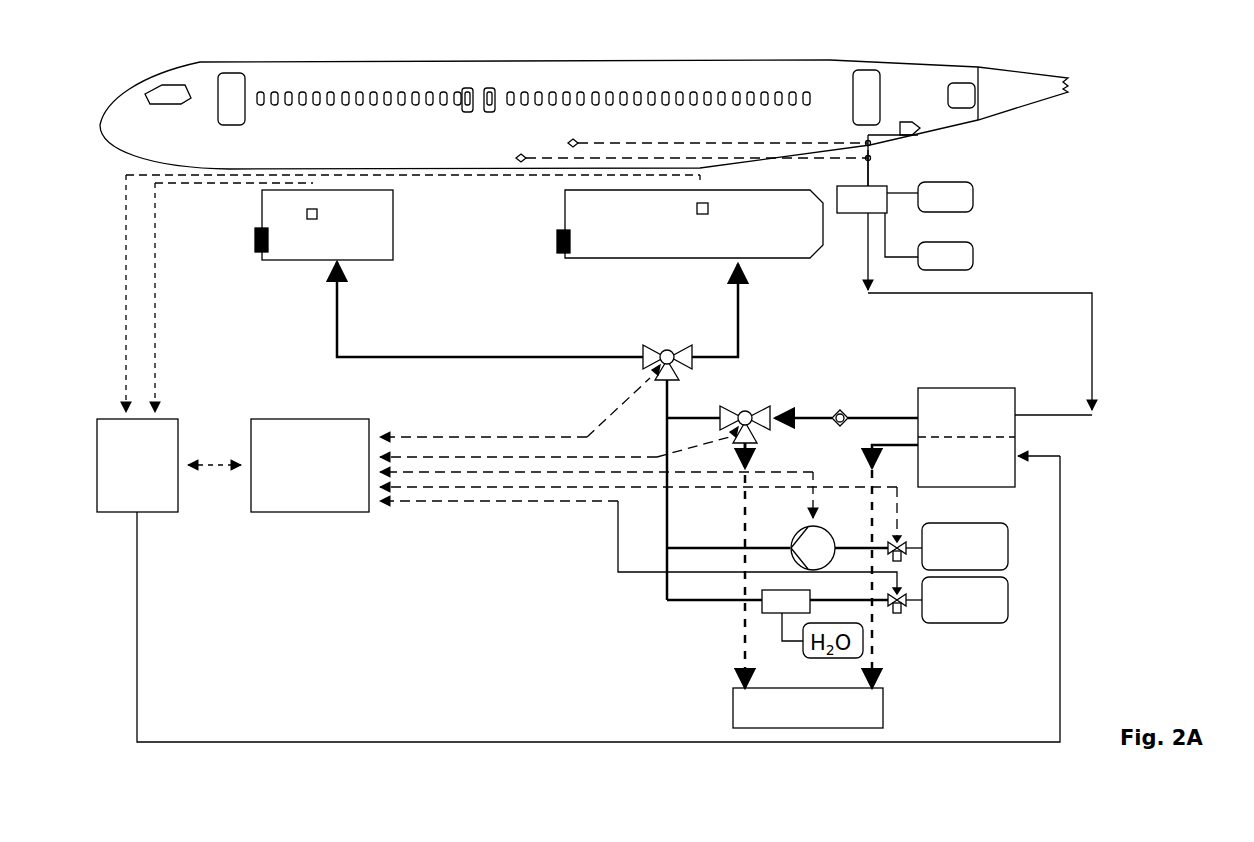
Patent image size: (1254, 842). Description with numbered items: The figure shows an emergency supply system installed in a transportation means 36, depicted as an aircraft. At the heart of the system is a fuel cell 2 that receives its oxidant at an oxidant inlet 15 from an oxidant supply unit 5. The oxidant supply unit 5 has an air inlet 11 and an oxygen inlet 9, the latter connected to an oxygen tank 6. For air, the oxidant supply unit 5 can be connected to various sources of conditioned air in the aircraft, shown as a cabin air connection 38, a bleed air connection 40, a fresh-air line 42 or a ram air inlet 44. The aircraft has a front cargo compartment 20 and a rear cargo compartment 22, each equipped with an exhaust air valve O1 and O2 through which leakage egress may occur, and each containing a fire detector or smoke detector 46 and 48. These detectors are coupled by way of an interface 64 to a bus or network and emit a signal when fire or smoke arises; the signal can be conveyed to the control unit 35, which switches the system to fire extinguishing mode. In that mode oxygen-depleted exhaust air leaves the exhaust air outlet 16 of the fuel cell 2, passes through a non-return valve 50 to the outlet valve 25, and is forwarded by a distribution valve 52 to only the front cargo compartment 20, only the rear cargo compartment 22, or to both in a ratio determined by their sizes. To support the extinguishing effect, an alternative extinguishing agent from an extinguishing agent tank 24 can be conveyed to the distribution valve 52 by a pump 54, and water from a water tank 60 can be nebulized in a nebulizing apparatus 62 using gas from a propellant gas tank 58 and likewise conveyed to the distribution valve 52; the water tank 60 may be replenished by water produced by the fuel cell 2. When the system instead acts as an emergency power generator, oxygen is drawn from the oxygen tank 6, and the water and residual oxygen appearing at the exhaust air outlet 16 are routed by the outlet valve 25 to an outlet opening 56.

The transportation means 36 is at (662, 44).
The ram air inlet 44 is at (906, 122).
The fresh-air line 42 is at (566, 143).
The bleed air connection 40 is at (513, 158).
The cabin air connection 38 is at (828, 142).
The air inlet 11 is at (874, 172).
The front cargo compartment 20 is at (365, 258).
The exhaust air valve O1 is at (255, 236).
The fire detector or smoke detector 46 is at (311, 220).
The rear cargo compartment 22 is at (620, 262).
The exhaust air valve O2 is at (557, 238).
The fire detector or smoke detector 48 is at (710, 208).
The oxidant supply unit 5 is at (855, 203).
The oxygen tank 6 is at (968, 188).
The oxygen inlet 9 is at (892, 208).
The distribution valve 52 is at (665, 350).
The outlet valve 25 is at (750, 408).
The non-return valve 50 is at (840, 408).
The fuel cell 2 is at (985, 392).
The exhaust air outlet 16 is at (912, 410).
The oxidant inlet 15 is at (1022, 407).
The water tank 60 is at (855, 652).
The control unit 35 is at (168, 433).
The interface 64 is at (312, 428).
The pump 54 is at (815, 545).
The extinguishing agent tank 24 is at (995, 545).
The propellant gas tank 58 is at (995, 600).
The nebulizing apparatus 62 is at (775, 612).
The outlet opening 56 is at (742, 710).